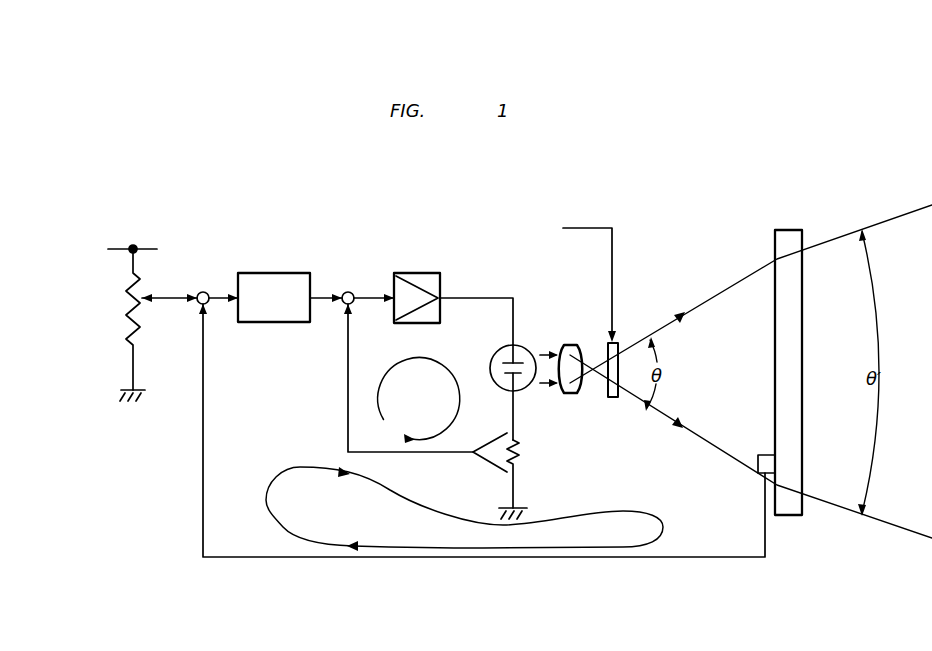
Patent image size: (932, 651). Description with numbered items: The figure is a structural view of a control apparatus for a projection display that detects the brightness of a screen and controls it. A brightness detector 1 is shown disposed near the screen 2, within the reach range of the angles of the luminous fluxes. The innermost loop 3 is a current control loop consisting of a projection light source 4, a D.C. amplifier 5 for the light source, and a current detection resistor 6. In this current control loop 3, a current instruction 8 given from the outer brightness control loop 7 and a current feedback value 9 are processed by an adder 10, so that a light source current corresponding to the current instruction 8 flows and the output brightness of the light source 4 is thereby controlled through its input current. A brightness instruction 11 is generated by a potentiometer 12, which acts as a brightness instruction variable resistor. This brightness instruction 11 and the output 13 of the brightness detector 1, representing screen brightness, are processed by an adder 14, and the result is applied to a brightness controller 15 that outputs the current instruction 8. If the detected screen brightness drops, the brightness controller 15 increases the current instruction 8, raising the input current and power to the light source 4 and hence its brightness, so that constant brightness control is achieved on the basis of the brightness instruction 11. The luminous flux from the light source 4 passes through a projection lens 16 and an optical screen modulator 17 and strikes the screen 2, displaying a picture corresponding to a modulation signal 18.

The brightness detector 1 is at (762, 455).
The screen 2 is at (790, 230).
The current control loop 3 is at (383, 421).
The projection light source 4 is at (526, 350).
The D.C. amplifier 5 is at (418, 273).
The current detection resistor 6 is at (520, 440).
The brightness control loop 7 is at (275, 525).
The current instruction 8 is at (318, 290).
The current feedback value 9 is at (350, 357).
The adder 10 is at (354, 290).
The brightness instruction 11 is at (163, 292).
The potentiometer 12 is at (125, 305).
The output of the brightness detector 13 is at (205, 360).
The adder 14 is at (207, 290).
The brightness controller 15 is at (276, 273).
The projection lens 16 is at (570, 344).
The optical screen modulator 17 is at (614, 400).
The modulation signal 18 is at (592, 228).